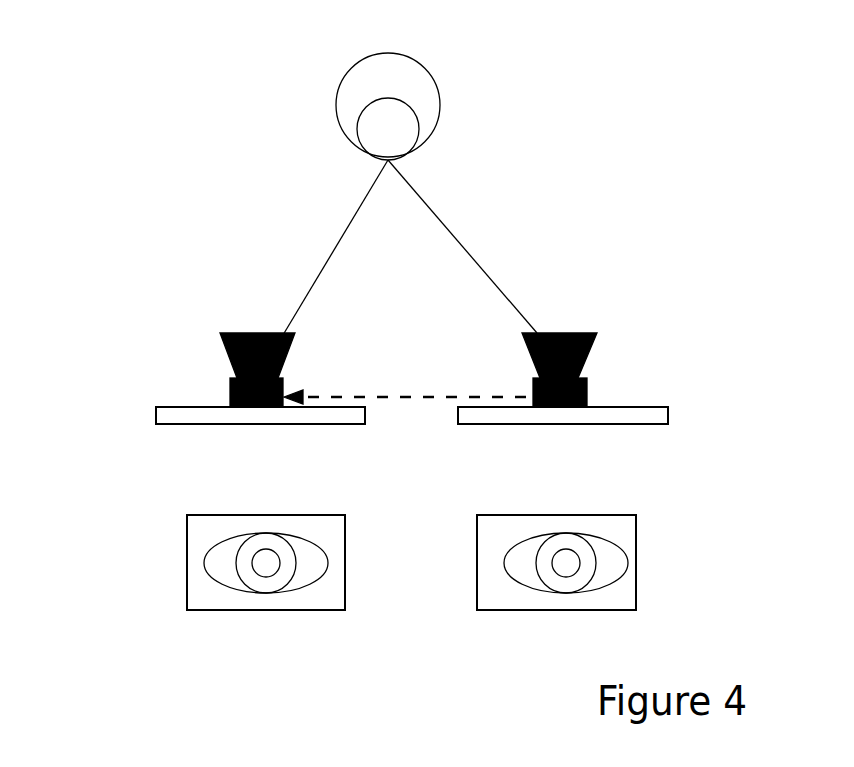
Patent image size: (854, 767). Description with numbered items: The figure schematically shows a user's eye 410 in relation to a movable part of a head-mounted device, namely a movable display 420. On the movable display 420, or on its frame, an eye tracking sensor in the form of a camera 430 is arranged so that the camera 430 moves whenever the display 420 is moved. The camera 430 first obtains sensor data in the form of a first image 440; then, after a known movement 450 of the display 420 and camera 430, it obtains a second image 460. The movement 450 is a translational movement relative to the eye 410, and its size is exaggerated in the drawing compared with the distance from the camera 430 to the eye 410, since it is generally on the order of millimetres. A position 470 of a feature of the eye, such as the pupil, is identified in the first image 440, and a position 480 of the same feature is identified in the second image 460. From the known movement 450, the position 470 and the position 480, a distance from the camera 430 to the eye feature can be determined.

The user's eye 410 is at (342, 85).
The movable display 420 is at (155, 417).
The camera 430 is at (227, 355).
The first image 440 is at (477, 558).
The movement 450 is at (411, 401).
The second image 460 is at (187, 558).
The position of a feature of the eye in the first image 470 is at (566, 561).
The position of the feature in the second image 480 is at (266, 561).